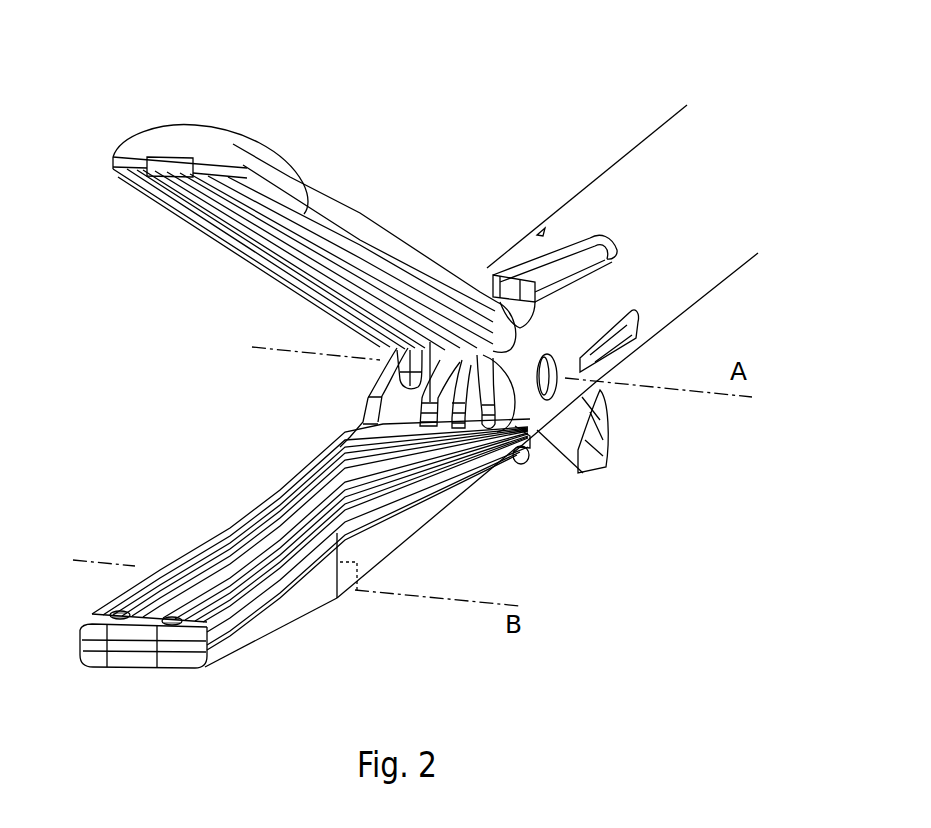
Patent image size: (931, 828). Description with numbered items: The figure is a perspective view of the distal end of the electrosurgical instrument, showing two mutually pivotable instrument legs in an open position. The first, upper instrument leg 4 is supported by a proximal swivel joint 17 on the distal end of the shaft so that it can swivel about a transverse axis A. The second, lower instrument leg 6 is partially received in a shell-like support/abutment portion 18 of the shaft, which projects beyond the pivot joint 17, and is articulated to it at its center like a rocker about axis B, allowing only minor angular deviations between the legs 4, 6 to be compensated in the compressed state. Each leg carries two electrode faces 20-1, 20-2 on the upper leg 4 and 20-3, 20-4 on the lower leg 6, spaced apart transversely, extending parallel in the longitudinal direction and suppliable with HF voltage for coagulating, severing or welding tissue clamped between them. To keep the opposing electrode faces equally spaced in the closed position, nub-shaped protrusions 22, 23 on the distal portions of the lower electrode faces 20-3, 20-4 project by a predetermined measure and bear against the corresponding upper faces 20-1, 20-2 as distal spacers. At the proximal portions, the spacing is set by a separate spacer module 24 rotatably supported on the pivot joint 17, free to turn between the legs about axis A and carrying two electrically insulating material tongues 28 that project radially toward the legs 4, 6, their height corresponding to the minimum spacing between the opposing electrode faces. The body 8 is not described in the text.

The first instrument leg 4 is at (192, 135).
The second instrument leg 6 is at (320, 592).
The body 8 is at (682, 239).
The swivel joint 17 is at (622, 428).
The support/abutment portion 18 is at (412, 527).
The electrode face 20-1 is at (190, 202).
The electrode face 20-2 is at (237, 200).
The electrode face 20-3 is at (185, 572).
The electrode face 20-4 is at (272, 558).
The protrusion 22 is at (122, 610).
The protrusion 23 is at (202, 606).
The spacer module 24 is at (472, 410).
The material tongue 28 is at (450, 437).